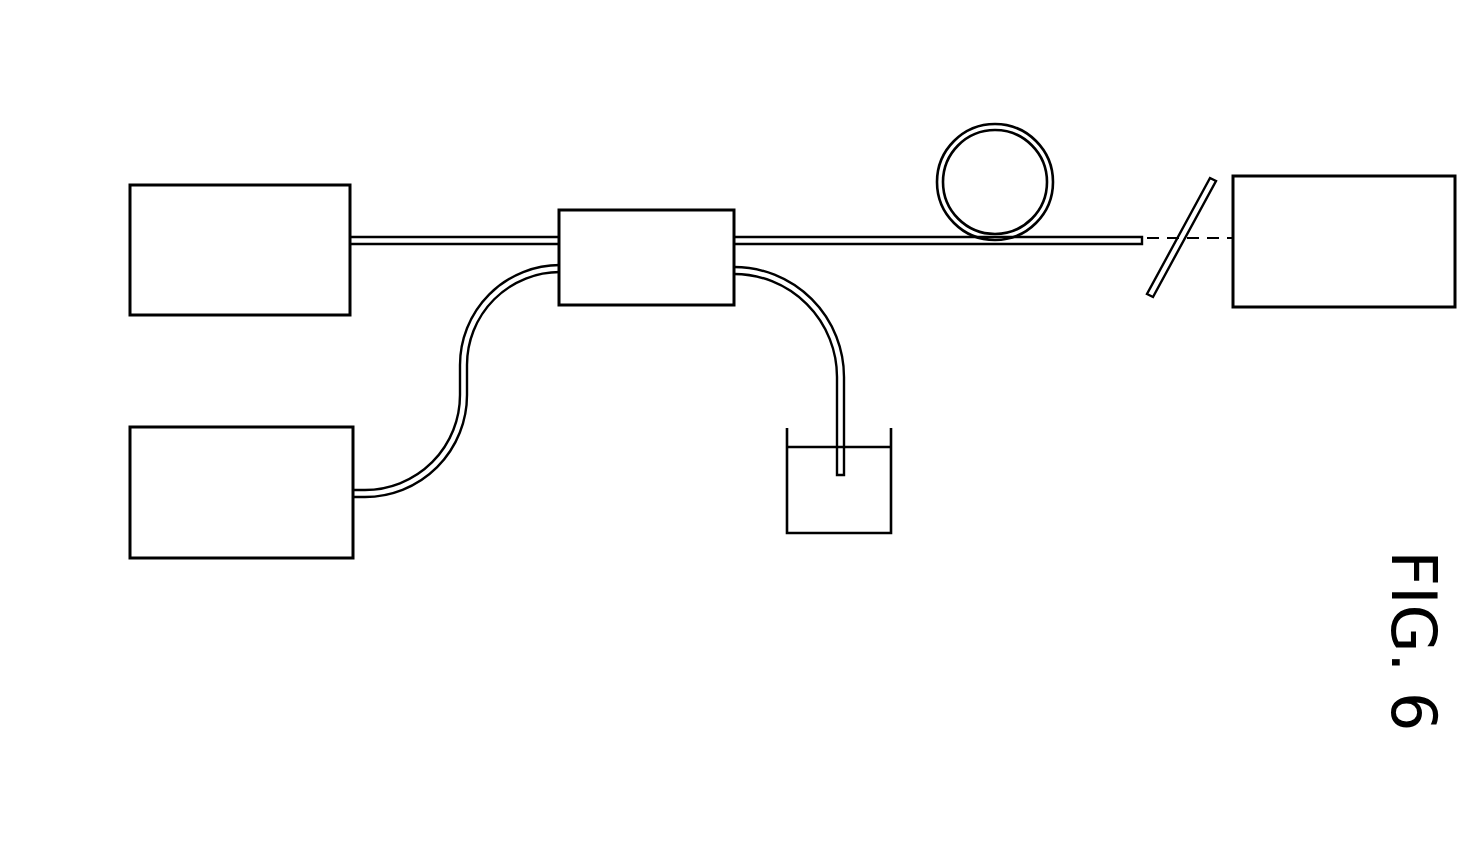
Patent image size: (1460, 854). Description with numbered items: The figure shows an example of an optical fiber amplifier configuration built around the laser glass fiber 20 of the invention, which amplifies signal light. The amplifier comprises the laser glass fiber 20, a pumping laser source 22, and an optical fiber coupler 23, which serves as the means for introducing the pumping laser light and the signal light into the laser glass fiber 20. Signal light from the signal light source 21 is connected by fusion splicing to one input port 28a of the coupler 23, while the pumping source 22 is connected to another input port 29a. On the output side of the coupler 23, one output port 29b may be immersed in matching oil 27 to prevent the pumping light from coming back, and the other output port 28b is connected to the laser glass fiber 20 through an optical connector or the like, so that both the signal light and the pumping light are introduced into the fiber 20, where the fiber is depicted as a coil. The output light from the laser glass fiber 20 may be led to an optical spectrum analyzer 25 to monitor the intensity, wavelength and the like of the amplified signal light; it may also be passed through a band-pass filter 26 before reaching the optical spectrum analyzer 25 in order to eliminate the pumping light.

The laser glass fiber 20 is at (1040, 142).
The signal light source 21 is at (247, 185).
The pumping laser source 22 is at (254, 560).
The optical fiber coupler 23 is at (635, 305).
The optical spectrum analyzer 25 is at (1345, 307).
The band-pass filter 26 is at (1172, 268).
The matching oil 27 is at (830, 535).
The input port 28a is at (447, 237).
The output port 28b is at (830, 237).
The input port 29a is at (438, 452).
The output port 29b is at (822, 337).